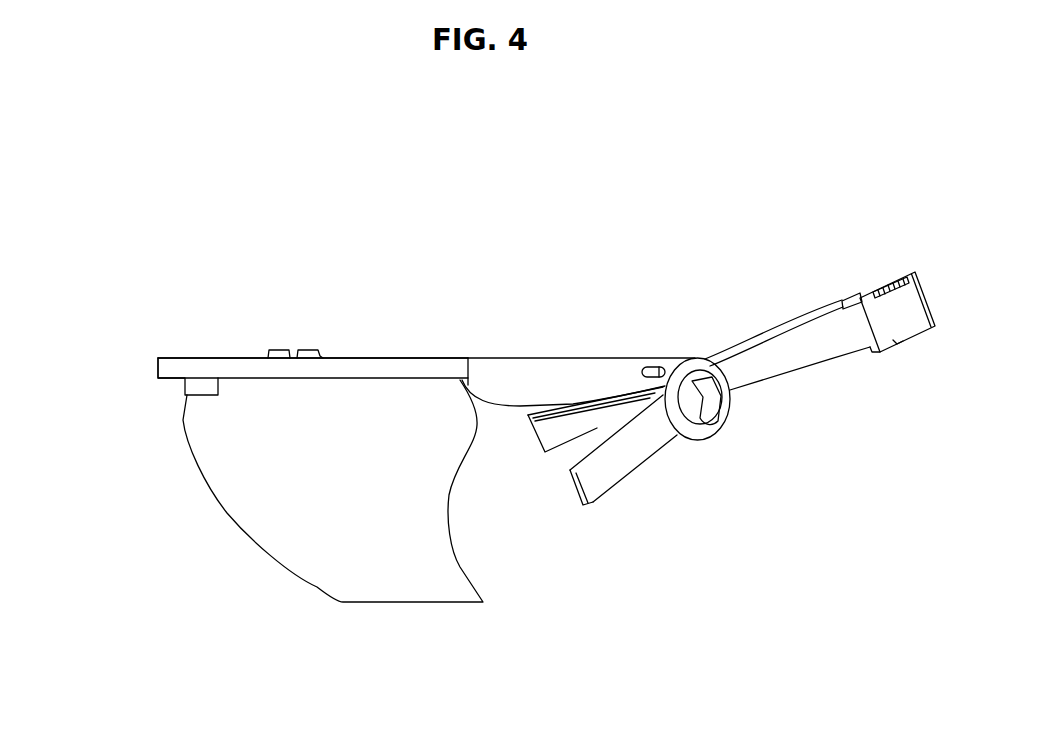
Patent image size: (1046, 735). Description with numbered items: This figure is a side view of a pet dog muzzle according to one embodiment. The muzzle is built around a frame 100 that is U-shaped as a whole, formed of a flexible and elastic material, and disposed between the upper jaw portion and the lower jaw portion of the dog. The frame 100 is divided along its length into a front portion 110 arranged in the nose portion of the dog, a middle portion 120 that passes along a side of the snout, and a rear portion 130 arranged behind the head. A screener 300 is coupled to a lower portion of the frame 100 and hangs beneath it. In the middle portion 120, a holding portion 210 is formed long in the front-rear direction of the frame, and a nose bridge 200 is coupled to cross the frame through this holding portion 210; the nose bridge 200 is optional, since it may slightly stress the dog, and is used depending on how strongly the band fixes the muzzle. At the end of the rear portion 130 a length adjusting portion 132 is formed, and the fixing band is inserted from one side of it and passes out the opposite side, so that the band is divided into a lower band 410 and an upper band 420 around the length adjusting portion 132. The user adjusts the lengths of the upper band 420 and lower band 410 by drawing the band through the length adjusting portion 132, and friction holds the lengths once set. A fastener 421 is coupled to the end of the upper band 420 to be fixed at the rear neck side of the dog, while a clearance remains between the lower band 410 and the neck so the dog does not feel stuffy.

The frame 100 is at (188, 348).
The front portion 110 is at (165, 368).
The middle portion 120 is at (395, 366).
The rear portion 130 is at (572, 377).
The length adjusting portion 132 is at (697, 370).
The nose bridge 200 is at (308, 350).
The holding portion 210 is at (280, 350).
The screener 300 is at (292, 533).
The lower band 410 is at (637, 448).
The upper band 420 is at (817, 355).
The fastener 421 is at (905, 327).